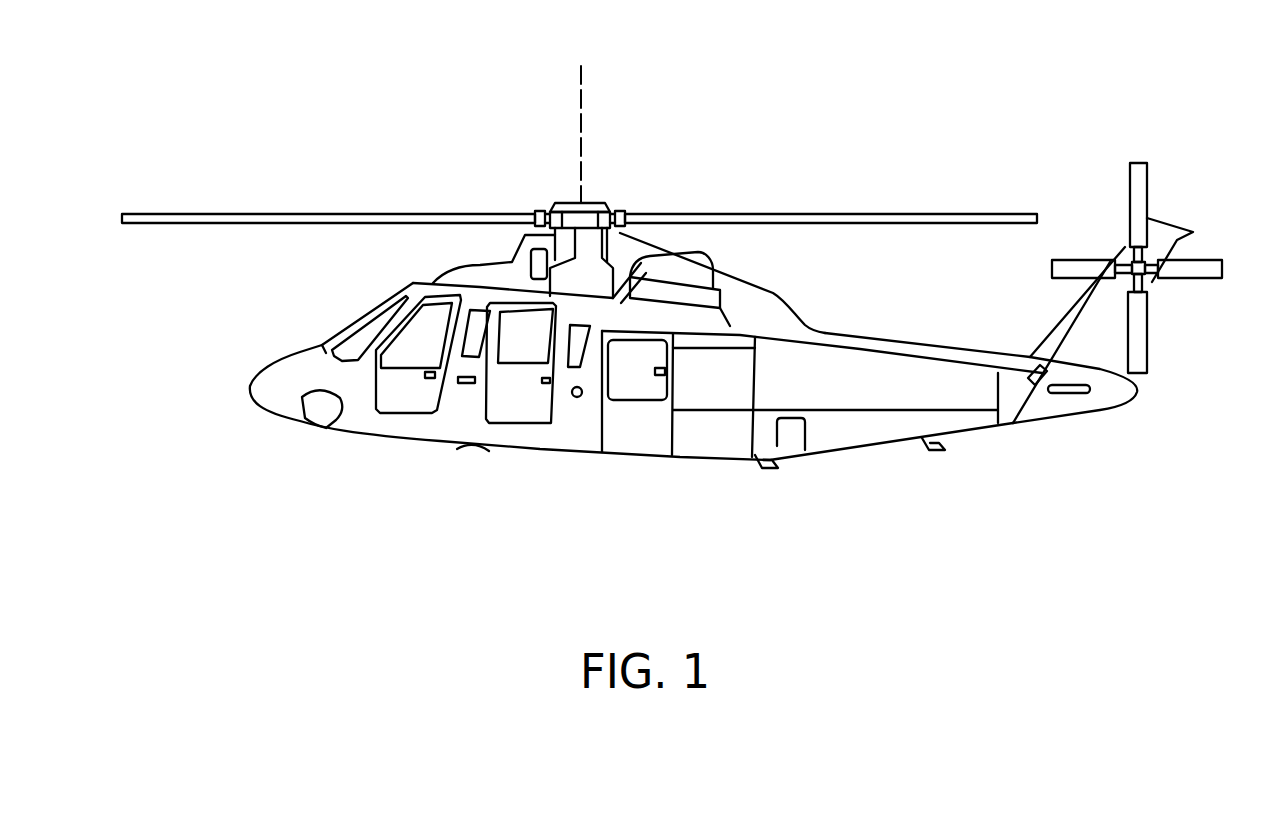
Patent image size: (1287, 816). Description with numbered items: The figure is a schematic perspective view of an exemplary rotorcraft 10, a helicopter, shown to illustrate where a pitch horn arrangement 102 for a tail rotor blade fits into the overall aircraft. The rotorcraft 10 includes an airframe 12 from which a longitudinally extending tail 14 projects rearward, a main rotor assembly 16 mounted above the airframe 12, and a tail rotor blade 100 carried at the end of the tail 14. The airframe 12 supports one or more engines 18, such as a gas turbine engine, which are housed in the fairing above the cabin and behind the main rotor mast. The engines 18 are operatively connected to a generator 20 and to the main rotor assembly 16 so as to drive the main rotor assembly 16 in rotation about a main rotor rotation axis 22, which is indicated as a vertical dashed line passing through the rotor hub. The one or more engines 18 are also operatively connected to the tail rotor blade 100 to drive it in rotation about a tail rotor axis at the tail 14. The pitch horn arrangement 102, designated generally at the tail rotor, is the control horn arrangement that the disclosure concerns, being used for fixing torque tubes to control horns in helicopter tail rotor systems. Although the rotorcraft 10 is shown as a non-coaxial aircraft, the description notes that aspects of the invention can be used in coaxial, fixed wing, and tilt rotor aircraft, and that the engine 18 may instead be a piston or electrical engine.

The rotorcraft 10 is at (462, 523).
The airframe 12 is at (463, 403).
The longitudinally extending tail 14 is at (850, 428).
The main rotor assembly 16 is at (901, 185).
The engine 18 is at (690, 295).
The generator 20 is at (575, 275).
The main rotor rotation axis 22 is at (581, 117).
The tail rotor blade 100 is at (1140, 181).
The pitch horn arrangement 102 is at (1118, 233).